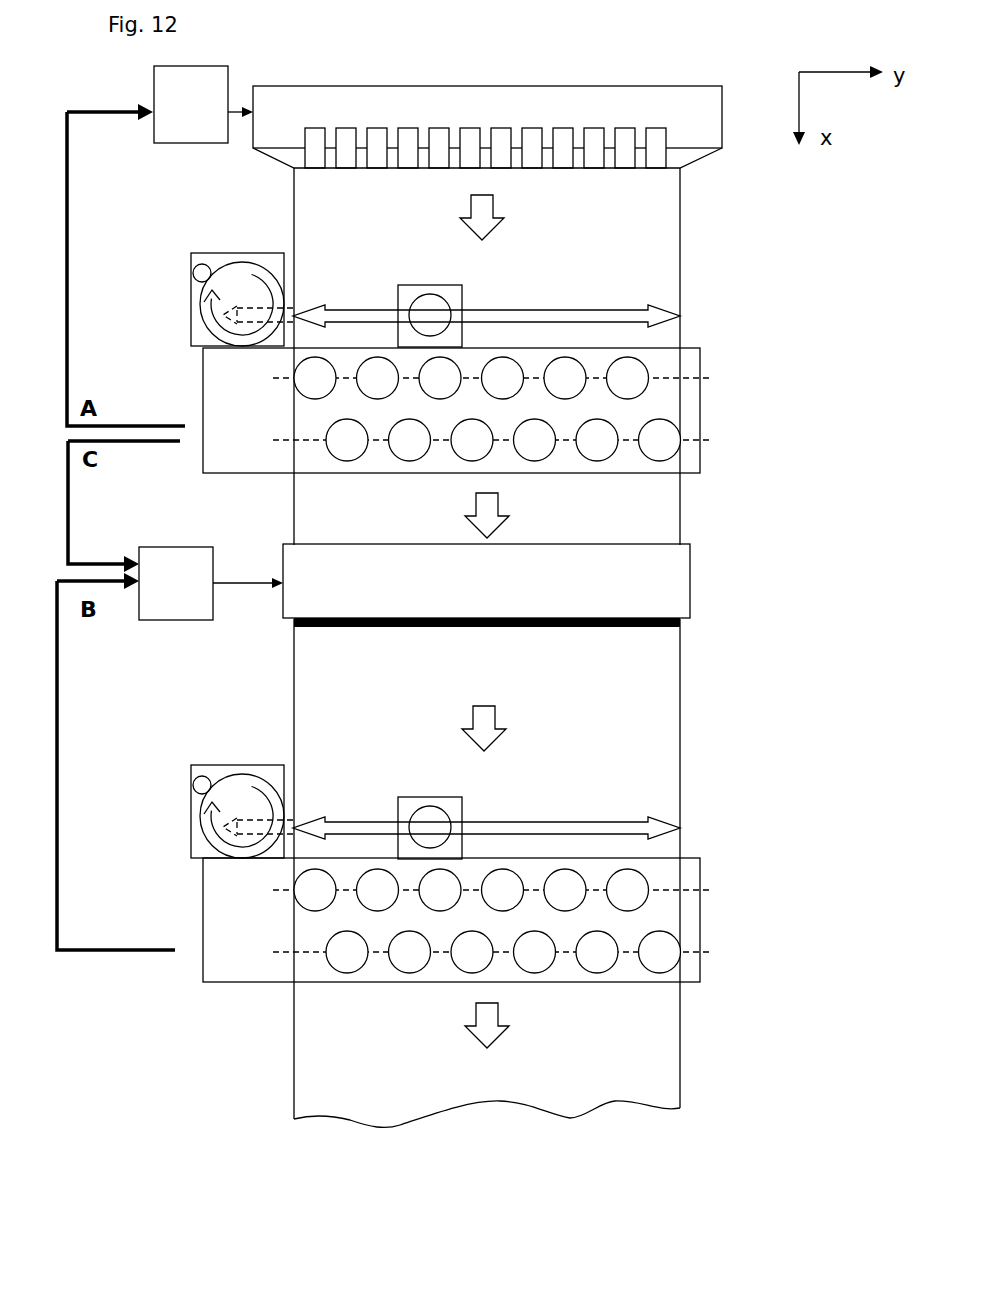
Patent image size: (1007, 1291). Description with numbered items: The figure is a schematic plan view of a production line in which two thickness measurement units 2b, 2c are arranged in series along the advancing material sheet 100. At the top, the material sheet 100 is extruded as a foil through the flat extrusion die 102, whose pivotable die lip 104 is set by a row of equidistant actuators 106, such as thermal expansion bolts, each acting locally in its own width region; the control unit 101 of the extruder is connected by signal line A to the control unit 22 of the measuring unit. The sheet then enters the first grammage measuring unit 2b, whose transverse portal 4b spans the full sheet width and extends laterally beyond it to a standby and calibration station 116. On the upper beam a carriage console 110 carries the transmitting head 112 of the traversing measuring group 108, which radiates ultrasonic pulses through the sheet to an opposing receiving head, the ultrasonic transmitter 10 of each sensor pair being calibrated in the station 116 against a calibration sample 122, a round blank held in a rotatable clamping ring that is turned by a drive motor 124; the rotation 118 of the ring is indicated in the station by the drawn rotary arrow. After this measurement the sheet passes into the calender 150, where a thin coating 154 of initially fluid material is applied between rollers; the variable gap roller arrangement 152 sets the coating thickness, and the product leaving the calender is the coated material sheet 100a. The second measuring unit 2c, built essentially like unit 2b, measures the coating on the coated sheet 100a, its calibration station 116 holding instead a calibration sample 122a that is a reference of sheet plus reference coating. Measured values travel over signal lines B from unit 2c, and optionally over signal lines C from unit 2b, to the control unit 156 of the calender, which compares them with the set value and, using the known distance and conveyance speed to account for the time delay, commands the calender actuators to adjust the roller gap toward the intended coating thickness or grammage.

The control unit of the measuring unit 22 is at (191, 104).
The control unit of the extruder 101 is at (191, 104).
The flat extrusion die 102 is at (697, 110).
The pivotable die lip 104 is at (291, 160).
The actuators 106 is at (317, 145).
The measuring group 108 is at (398, 282).
The material sheet 100 is at (667, 197).
The coated material sheet 100a is at (660, 730).
The carriage console 110 is at (422, 290).
The transmitting head 112 is at (432, 311).
The standby and calibration station 116 is at (172, 363).
The rotation of imaging unit 118 is at (208, 317).
The calibration sample 122 is at (234, 278).
The calibration sample for coated sheet 122a is at (238, 790).
The drive motor 124 is at (196, 278).
The ultrasonic transmitter 10 is at (643, 395).
The transverse portal 4b is at (688, 423).
The grammage measuring unit 2b is at (180, 461).
The measuring unit for the coating 2c is at (174, 1011).
The calender 150 is at (656, 569).
The variable gap roller arrangement 152 is at (645, 625).
The coating 154 is at (656, 682).
The control unit of the calender 156 is at (176, 583).